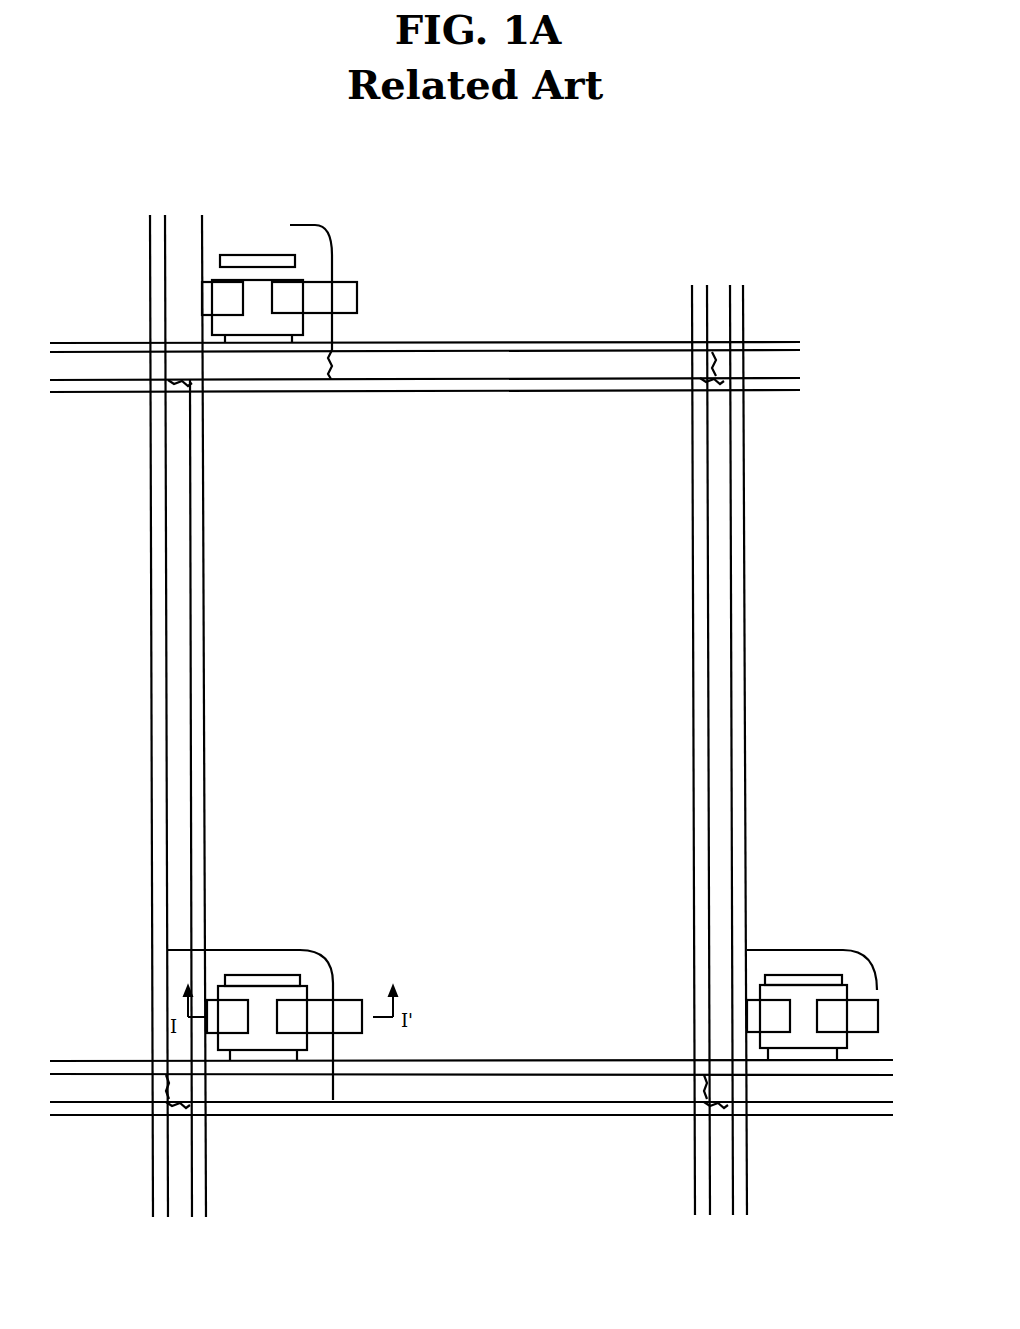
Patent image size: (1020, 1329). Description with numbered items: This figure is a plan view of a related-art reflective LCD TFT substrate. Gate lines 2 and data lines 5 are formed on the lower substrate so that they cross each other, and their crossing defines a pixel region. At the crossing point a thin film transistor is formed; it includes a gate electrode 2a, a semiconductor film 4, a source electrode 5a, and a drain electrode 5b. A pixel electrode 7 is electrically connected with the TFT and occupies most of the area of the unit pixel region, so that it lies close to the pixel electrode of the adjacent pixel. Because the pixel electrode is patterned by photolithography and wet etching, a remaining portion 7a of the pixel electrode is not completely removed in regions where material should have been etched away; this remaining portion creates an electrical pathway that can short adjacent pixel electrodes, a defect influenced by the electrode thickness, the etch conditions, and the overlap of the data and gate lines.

The gate line 2 is at (505, 1087).
The gate electrode 2a is at (253, 1053).
The semiconductor film 4 is at (273, 1042).
The data line 5 is at (178, 813).
The source electrode 5a is at (232, 1010).
The drain electrode 5b is at (322, 1007).
The pixel electrode 7 is at (667, 760).
The remaining portion of the pixel electrode 7a is at (343, 356).